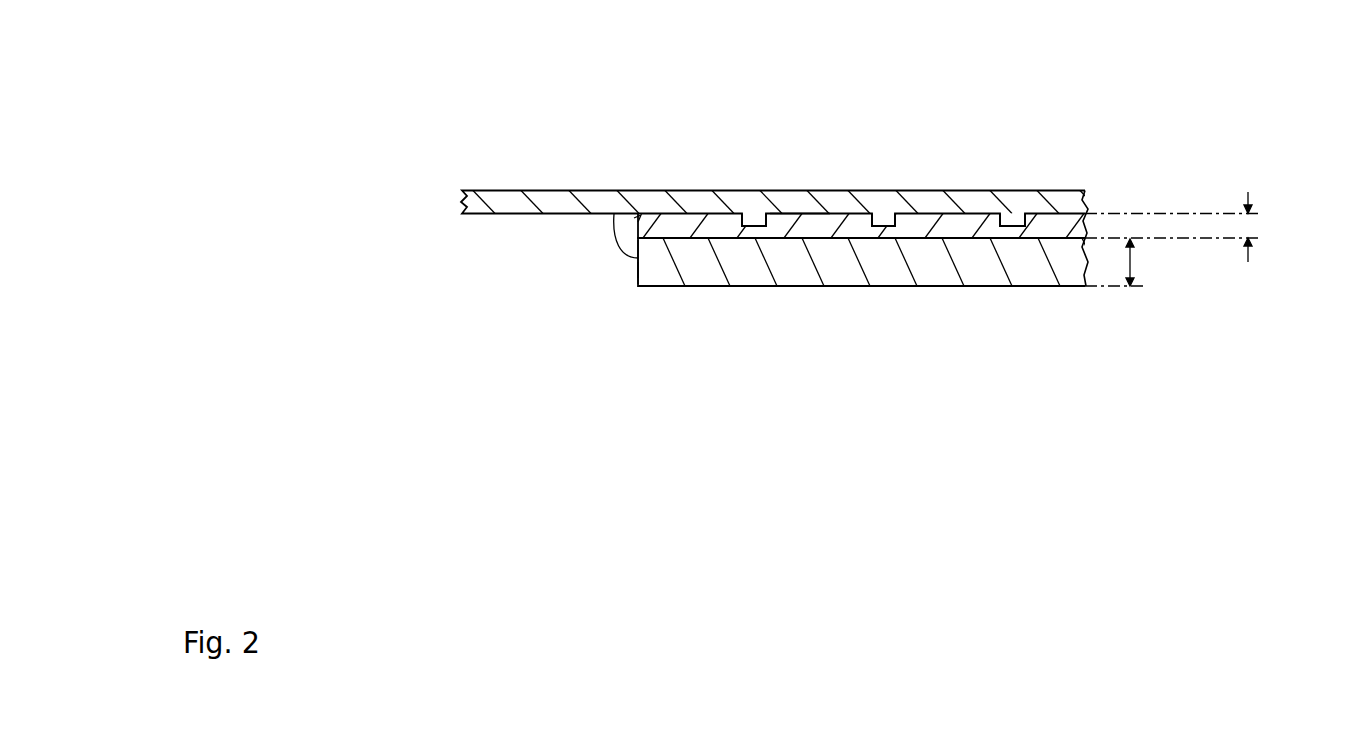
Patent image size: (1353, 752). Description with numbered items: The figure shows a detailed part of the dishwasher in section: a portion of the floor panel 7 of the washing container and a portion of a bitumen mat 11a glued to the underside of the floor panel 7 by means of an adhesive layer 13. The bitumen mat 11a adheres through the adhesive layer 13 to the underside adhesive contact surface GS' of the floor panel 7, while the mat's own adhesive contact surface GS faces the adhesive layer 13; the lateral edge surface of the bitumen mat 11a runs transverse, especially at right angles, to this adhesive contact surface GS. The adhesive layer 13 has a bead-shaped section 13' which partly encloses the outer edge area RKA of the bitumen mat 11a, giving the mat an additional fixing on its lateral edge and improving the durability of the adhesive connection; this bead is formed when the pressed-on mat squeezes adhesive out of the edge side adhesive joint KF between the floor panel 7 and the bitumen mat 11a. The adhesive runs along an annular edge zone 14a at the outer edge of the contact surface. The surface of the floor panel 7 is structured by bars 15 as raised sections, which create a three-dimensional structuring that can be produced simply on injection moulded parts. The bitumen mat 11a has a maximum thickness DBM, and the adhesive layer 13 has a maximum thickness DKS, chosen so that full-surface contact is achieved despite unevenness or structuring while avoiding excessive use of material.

The floor panel 7 is at (693, 190).
The adhesive layer 13 is at (861, 182).
The bars 15 is at (744, 192).
The bitumen mat 11a is at (850, 273).
The annular edge zone 14a is at (655, 262).
The bead-shaped section 13' is at (589, 249).
The edge side adhesive joint KF is at (640, 216).
The adhesive contact surface of the floor panel GS' is at (824, 132).
The adhesive contact surface of the bitumen mat GS is at (932, 308).
The outer edge area RKA is at (638, 269).
The maximum thickness of the adhesive layer DKS is at (1203, 227).
The maximum thickness of the bitumen mat DBM is at (1146, 262).